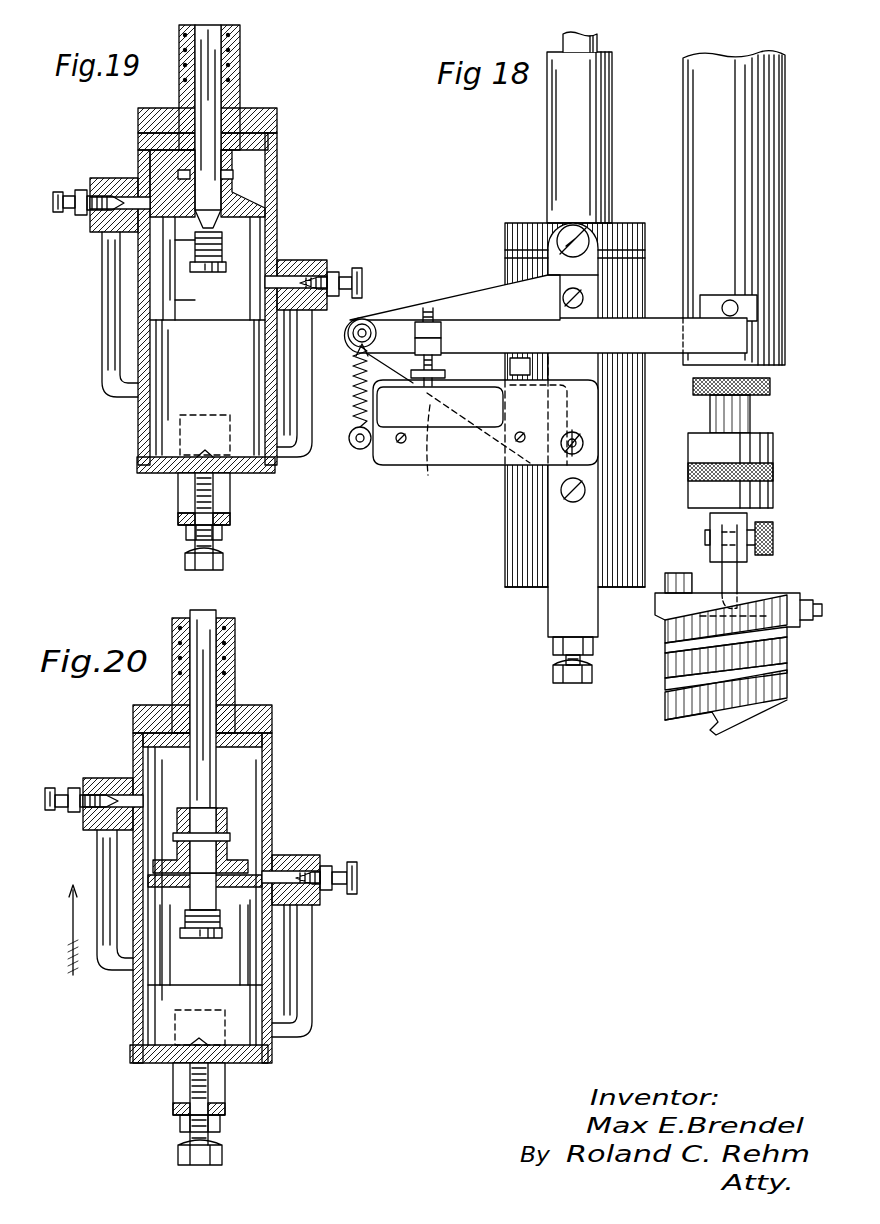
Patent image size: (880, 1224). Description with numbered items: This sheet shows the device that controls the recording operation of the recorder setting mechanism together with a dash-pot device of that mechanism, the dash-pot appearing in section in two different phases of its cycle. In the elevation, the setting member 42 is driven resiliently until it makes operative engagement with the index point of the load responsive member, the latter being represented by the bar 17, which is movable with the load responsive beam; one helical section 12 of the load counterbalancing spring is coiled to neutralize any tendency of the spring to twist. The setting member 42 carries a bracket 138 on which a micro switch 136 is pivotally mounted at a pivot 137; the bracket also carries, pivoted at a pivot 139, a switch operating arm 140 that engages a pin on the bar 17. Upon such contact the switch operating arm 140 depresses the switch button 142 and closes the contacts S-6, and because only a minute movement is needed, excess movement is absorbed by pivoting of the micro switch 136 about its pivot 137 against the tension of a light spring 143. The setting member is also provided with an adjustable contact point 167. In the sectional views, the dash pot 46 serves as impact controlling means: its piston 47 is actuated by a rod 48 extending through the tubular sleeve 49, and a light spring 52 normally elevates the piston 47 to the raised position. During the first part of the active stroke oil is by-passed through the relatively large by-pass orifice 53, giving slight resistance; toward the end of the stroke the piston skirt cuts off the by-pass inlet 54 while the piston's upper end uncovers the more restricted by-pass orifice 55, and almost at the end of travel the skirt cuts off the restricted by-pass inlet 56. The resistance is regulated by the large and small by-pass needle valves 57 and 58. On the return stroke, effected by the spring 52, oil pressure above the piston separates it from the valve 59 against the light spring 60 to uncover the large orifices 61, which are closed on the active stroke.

In FIG. 18, the helical spring section 12 is at (665, 708).
In FIG. 18, the bar 17 is at (785, 160).
In FIG. 18, the setting member 42 is at (612, 120).
In FIG. 18, the dash pot 46 is at (640, 432).
In FIG. 20, the dash pot 46 is at (272, 785).
In FIG. 19, the piston 47 is at (275, 215).
In FIG. 20, the piston 47 is at (260, 958).
In FIG. 19, the rod 48 is at (218, 57).
In FIG. 18, the rod 48 is at (598, 44).
In FIG. 20, the rod 48 is at (216, 615).
In FIG. 19, the tubular sleeve 49 is at (242, 47).
In FIG. 20, the tubular sleeve 49 is at (235, 647).
In FIG. 19, the light spring 52 is at (232, 70).
In FIG. 20, the light spring 52 is at (226, 658).
In FIG. 19, the by-pass orifice 53 is at (130, 178).
In FIG. 20, the by-pass orifice 53 is at (128, 778).
In FIG. 19, the by-pass inlet 54 is at (120, 403).
In FIG. 20, the by-pass inlet 54 is at (125, 978).
In FIG. 19, the by-pass orifice 55 is at (290, 262).
In FIG. 20, the by-pass orifice 55 is at (285, 858).
In FIG. 19, the restricted by-pass inlet 56 is at (290, 462).
In FIG. 20, the restricted by-pass inlet 56 is at (286, 1040).
In FIG. 19, the large by-pass needle valve 57 is at (100, 218).
In FIG. 20, the large by-pass needle valve 57 is at (98, 795).
In FIG. 19, the small by-pass needle valve 58 is at (335, 270).
In FIG. 20, the small by-pass needle valve 58 is at (318, 895).
In FIG. 19, the valve 59 is at (230, 210).
In FIG. 20, the valve 59 is at (230, 820).
In FIG. 19, the light spring 60 is at (190, 272).
In FIG. 20, the light spring 60 is at (190, 938).
In FIG. 19, the large orifices 61 is at (168, 240).
In FIG. 20, the large orifices 61 is at (238, 912).
In FIG. 18, the micro switch 136 is at (373, 458).
In FIG. 18, the pivot 137 is at (562, 450).
In FIG. 18, the bracket 138 is at (490, 286).
In FIG. 18, the pivot 139 is at (356, 345).
In FIG. 18, the switch operating arm 140 is at (655, 360).
In FIG. 18, the switch button 142 is at (445, 382).
In FIG. 18, the light spring 143 is at (352, 420).
In FIG. 19, the adjustable contact point 167 is at (222, 565).
In FIG. 18, the adjustable contact point 167 is at (570, 685).
In FIG. 20, the adjustable contact point 167 is at (220, 1155).
In FIG. 18, the switch contacts S-6 is at (438, 452).